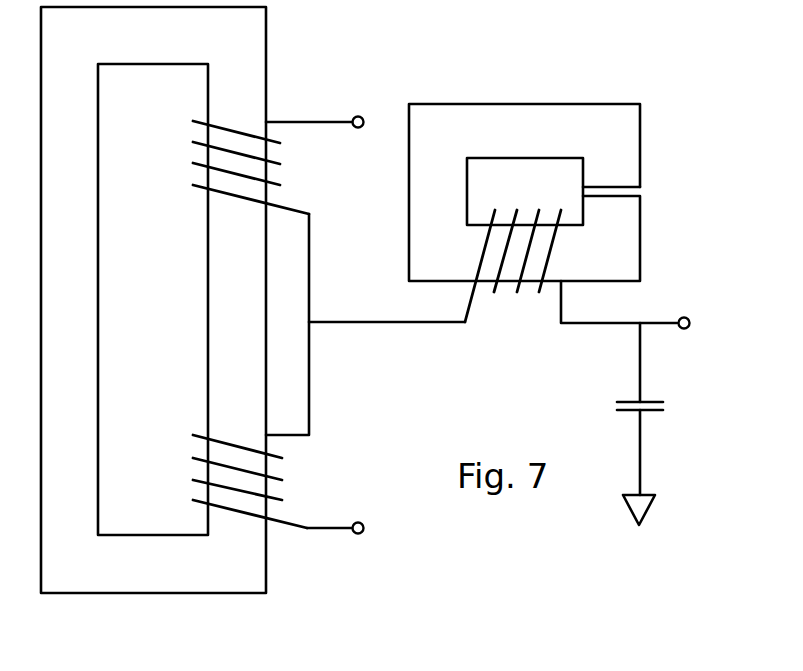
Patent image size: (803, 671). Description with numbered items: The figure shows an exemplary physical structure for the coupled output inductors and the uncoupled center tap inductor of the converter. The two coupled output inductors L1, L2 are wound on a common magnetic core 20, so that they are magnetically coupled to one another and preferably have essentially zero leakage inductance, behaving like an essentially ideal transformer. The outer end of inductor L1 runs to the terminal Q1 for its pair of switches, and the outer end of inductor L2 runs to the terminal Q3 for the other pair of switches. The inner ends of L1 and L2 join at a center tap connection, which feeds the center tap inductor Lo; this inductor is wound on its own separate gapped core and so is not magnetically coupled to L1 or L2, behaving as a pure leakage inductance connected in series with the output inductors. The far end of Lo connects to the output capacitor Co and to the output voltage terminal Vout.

The magnetic core 20 is at (153, 300).
The coupled output inductor L1 is at (193, 142).
The coupled output inductor L2 is at (193, 458).
The switch terminal Q1,Q2 Q1 is at (327, 105).
The switch terminal Q3,Q4 Q3 is at (347, 513).
The center tap inductor Lo is at (515, 295).
The output capacitor Co is at (628, 402).
The output voltage terminal Vout is at (655, 309).